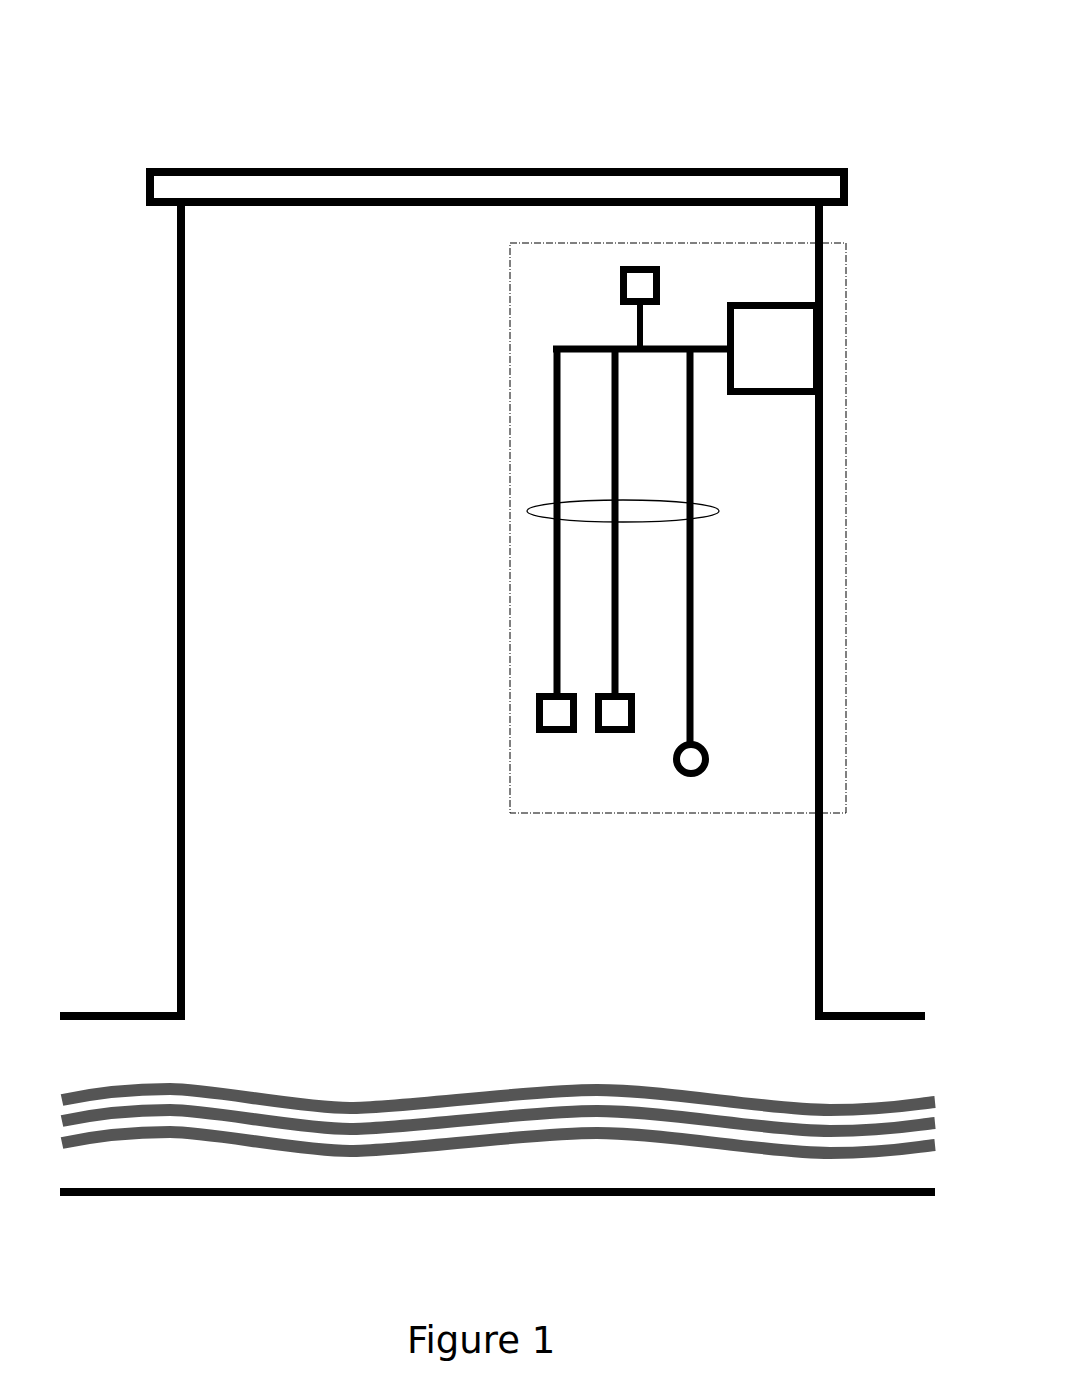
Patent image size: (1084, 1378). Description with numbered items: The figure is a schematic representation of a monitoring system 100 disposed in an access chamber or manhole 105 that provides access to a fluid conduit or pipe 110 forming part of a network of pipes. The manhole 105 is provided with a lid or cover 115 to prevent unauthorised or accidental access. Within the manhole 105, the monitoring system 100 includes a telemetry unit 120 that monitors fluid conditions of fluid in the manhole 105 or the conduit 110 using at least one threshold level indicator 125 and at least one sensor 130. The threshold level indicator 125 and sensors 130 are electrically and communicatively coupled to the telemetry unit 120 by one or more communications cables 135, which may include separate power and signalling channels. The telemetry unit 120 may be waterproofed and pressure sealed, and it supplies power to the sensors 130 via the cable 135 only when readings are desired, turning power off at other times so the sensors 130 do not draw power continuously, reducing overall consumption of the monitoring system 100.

The monitoring system 100 is at (855, 233).
The manhole 105 is at (176, 358).
The pipe 110 is at (121, 1013).
The lid 115 is at (592, 170).
The telemetry unit 120 is at (820, 347).
The threshold level indicator 125 is at (706, 752).
The sensor 130 is at (662, 283).
The communications cable 135 is at (720, 511).